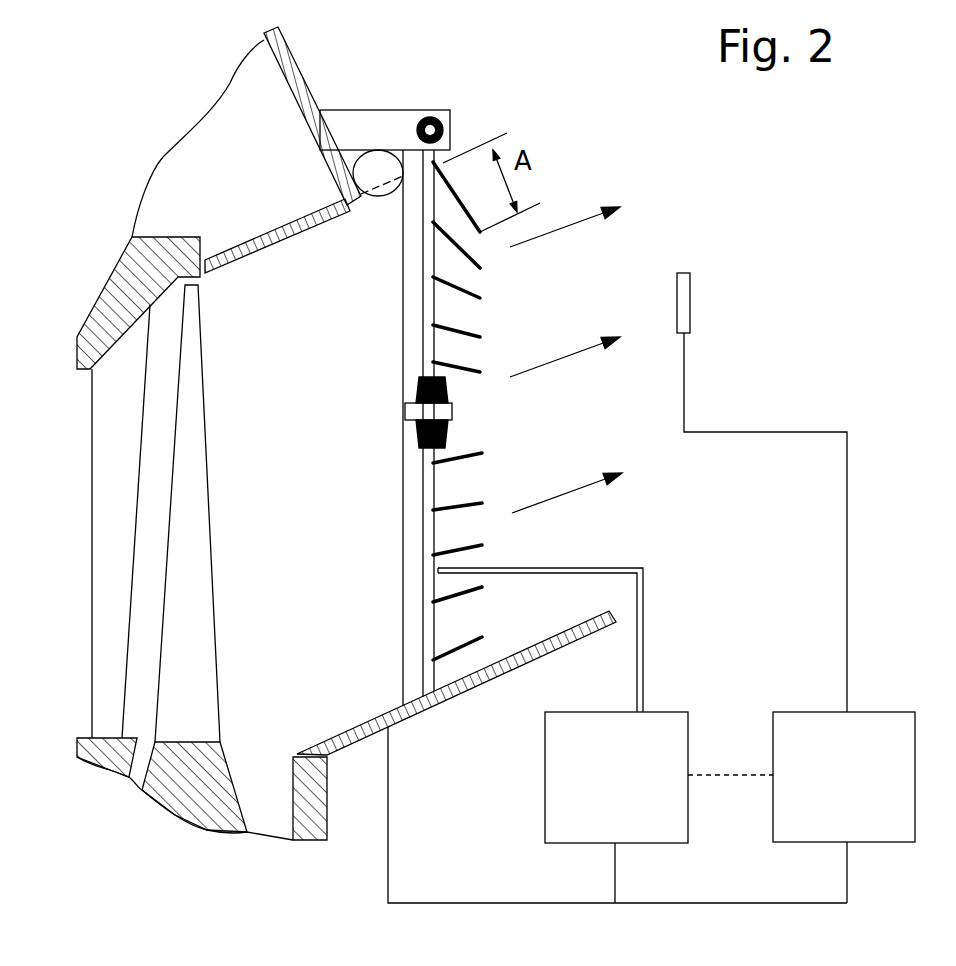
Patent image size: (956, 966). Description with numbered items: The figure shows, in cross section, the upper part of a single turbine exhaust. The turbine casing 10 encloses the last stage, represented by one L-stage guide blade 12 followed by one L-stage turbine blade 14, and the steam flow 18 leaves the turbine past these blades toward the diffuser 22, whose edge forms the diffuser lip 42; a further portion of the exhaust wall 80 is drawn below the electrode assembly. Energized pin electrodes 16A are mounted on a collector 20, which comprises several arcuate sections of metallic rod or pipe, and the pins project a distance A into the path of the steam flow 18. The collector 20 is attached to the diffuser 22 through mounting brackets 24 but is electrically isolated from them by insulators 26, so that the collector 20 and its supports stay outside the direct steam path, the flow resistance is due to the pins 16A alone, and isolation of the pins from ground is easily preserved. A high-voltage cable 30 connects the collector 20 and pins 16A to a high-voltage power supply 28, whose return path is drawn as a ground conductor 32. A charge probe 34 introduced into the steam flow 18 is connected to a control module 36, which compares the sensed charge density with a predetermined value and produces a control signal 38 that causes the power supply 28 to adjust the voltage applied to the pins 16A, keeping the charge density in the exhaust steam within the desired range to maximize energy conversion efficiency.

The turbine casing 10 is at (118, 293).
The L-stage guide blade 12 is at (120, 432).
The L-stage turbine blade 14 is at (188, 537).
The energized pin electrodes 16A is at (447, 255).
The steam flow 18 is at (555, 353).
The collector 20 is at (420, 345).
The diffuser 22 is at (287, 43).
The mounting brackets 24 is at (350, 122).
The insulators 26 is at (443, 115).
The high-voltage power supply 28 is at (663, 710).
The high-voltage cable 30 is at (565, 567).
The ground wire 32 is at (390, 830).
The charge probe 34 is at (692, 297).
The control module 36 is at (798, 712).
The control signal 38 is at (742, 777).
The diffuser lip 42 is at (370, 173).
The housing wall 80 is at (383, 725).